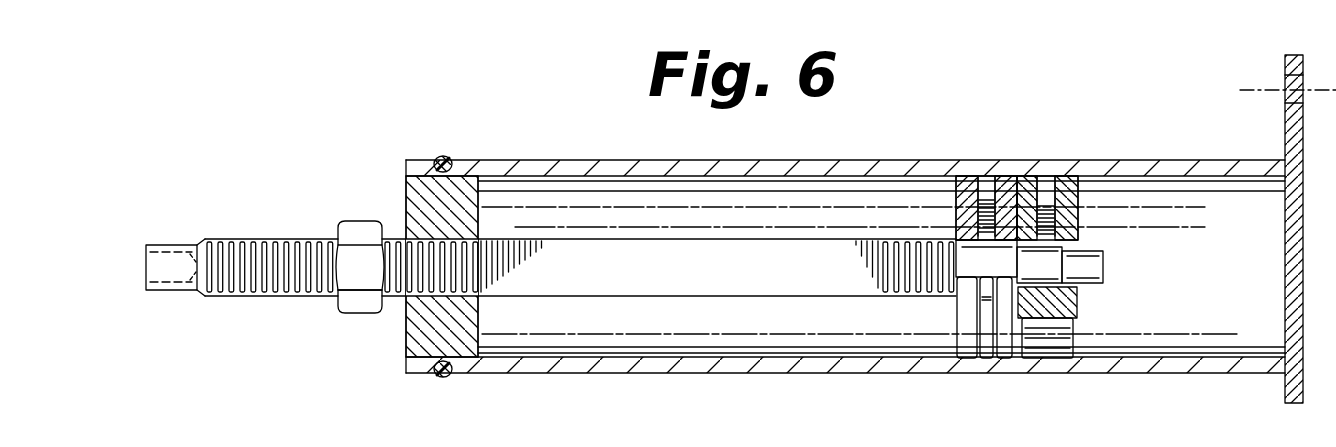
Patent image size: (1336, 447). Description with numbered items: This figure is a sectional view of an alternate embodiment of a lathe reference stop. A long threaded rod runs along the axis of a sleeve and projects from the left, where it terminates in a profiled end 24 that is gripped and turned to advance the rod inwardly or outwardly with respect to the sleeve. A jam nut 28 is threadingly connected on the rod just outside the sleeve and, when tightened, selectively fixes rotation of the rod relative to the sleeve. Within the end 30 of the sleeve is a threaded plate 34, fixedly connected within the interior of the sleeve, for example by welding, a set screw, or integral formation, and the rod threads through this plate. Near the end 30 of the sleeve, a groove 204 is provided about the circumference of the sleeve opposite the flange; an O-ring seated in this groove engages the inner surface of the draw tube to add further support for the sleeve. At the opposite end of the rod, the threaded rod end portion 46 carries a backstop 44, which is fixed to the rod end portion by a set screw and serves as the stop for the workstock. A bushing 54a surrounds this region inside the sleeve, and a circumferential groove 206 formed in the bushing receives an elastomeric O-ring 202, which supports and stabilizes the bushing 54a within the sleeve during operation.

The profiled end 24 is at (168, 248).
The jam nut 28 is at (338, 231).
The end 30 is at (446, 158).
The threaded plate 34 is at (406, 197).
The backstop 44 is at (1071, 184).
The threaded rod end portion 46 is at (975, 263).
The bushing 54a is at (1020, 130).
The O-ring 202 is at (982, 358).
The groove 204 is at (428, 376).
The circumferential groove 206 is at (1000, 358).